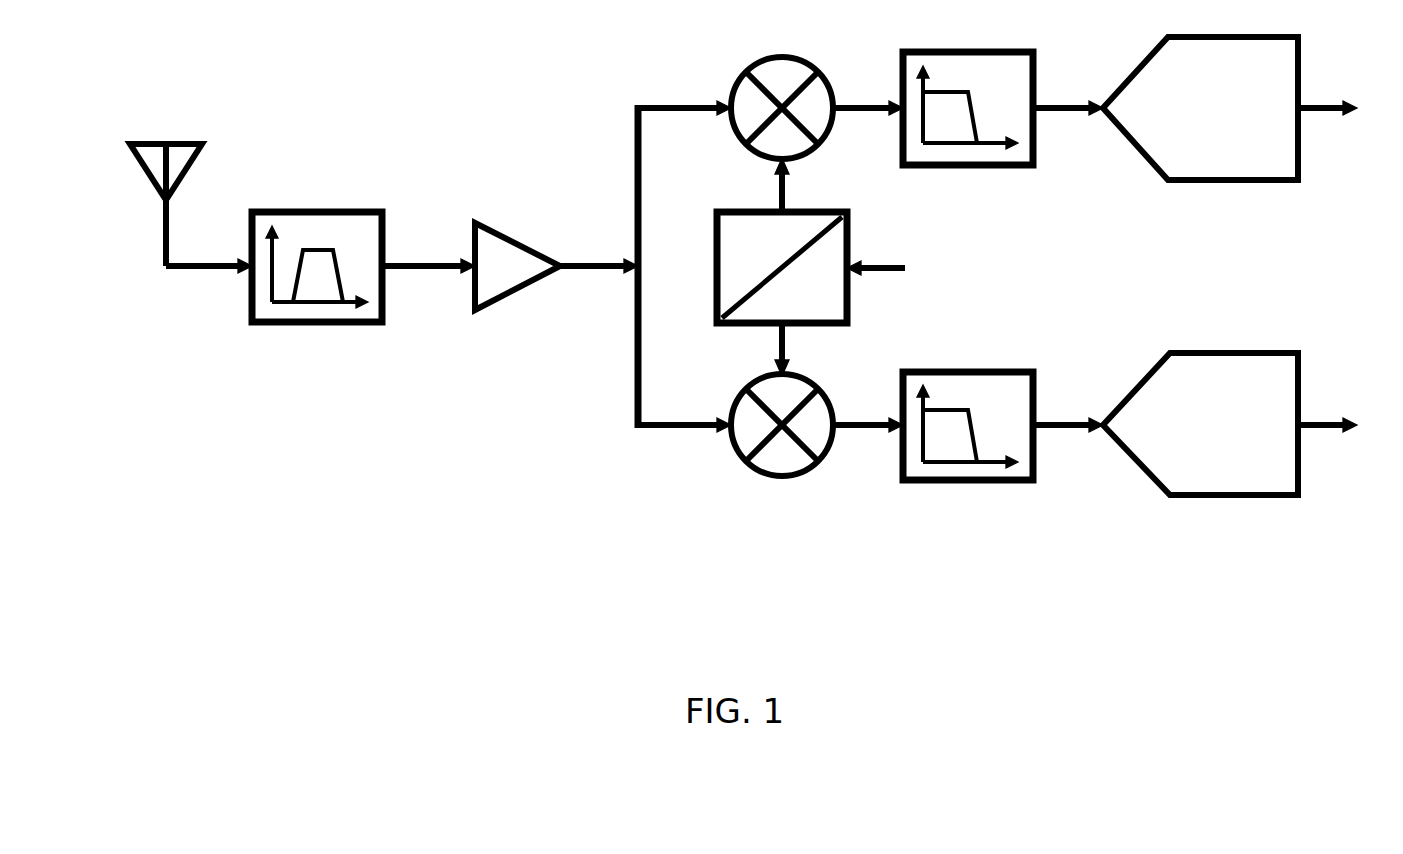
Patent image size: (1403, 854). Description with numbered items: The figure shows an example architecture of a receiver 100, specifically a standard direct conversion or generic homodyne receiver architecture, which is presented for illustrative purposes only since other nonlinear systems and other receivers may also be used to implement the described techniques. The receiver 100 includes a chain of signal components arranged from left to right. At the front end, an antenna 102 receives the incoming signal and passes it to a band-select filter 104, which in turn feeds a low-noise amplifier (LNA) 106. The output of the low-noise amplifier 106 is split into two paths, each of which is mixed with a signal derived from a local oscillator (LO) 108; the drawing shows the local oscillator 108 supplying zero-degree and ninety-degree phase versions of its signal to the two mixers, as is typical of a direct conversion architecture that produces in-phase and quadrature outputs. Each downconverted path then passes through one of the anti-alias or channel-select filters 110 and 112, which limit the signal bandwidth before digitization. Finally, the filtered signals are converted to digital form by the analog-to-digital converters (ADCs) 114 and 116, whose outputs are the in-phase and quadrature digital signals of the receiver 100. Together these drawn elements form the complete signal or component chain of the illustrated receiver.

The receiver 100 is at (294, 567).
The antenna 102 is at (152, 184).
The band-select filter 104 is at (338, 212).
The low-noise amplifier (LNA) 106 is at (478, 310).
The local oscillator (LO) 108 is at (725, 323).
The anti-alias or channel-select filter 110 is at (995, 165).
The anti-alias or channel-select filter 112 is at (997, 372).
The analog-to-digital converter (ADC) 114 is at (1160, 172).
The analog-to-digital converter (ADC) 116 is at (1160, 366).